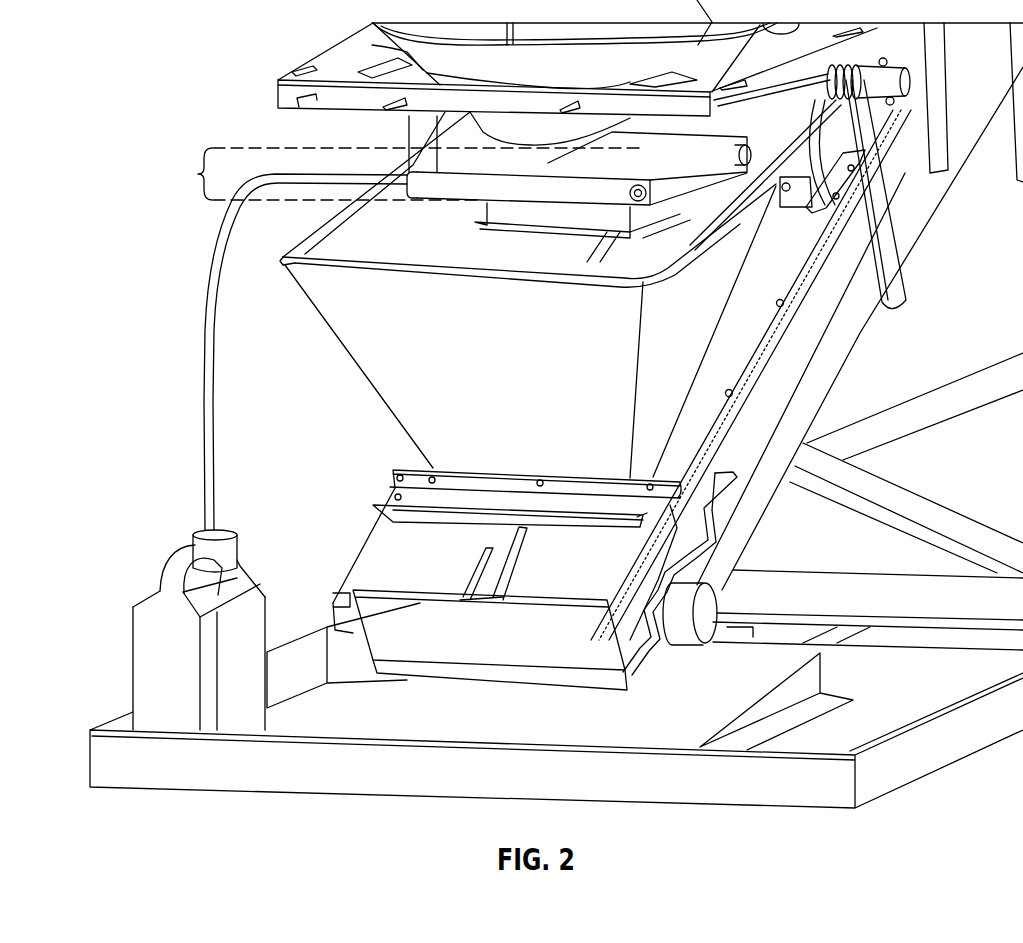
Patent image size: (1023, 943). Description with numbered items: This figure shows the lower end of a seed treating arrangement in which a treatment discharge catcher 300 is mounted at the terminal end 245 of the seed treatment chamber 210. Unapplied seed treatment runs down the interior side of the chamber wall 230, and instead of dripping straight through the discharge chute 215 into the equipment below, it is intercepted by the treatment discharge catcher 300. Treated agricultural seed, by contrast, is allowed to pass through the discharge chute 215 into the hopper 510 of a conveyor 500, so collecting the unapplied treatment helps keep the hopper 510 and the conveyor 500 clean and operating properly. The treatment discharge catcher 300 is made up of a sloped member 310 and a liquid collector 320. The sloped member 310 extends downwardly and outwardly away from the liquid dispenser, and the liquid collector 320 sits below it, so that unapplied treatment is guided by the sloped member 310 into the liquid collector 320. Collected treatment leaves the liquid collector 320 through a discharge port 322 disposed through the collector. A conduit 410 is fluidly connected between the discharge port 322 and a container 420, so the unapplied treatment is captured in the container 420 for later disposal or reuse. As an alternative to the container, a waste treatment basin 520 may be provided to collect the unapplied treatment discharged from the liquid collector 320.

The seed treatment chamber 210 is at (397, 117).
The discharge chute 215 is at (525, 208).
The chamber wall 230 is at (583, 144).
The terminal end 245 is at (531, 137).
The treatment discharge catcher 300 is at (398, 174).
The sloped member 310 is at (603, 165).
The liquid collector 320 is at (584, 190).
The discharge port 322 is at (409, 203).
The conduit 410 is at (202, 388).
The container 420 is at (190, 679).
The conveyor 500 is at (933, 265).
The hopper 510 is at (414, 381).
The waste treatment basin 520 is at (313, 630).